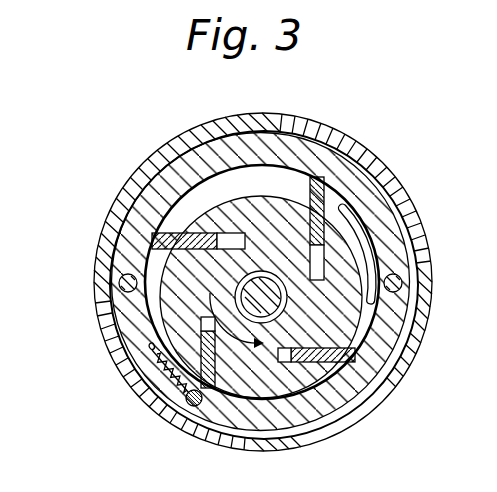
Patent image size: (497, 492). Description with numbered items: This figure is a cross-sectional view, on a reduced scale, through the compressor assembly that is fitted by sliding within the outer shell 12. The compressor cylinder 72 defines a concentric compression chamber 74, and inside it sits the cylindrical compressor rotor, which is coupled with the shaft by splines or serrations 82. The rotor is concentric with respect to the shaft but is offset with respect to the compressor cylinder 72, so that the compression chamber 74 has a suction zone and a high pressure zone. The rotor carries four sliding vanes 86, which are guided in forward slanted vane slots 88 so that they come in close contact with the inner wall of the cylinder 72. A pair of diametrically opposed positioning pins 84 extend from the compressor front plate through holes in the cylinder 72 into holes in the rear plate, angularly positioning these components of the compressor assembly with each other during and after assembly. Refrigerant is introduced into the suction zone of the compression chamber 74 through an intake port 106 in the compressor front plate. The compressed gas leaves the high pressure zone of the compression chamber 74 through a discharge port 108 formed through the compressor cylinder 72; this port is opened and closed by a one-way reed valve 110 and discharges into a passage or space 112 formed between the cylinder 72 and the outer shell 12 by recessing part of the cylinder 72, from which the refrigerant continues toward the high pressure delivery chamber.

The outer shell 12 is at (360, 153).
The compressor cylinder 72 is at (264, 422).
The compression chamber 74 is at (248, 181).
The splines or serrations 82 is at (300, 294).
The positioning pins 84 is at (120, 277).
The sliding vanes 86 is at (150, 193).
The vane slots 88 is at (224, 236).
The intake port 106 is at (345, 229).
The discharge port 108 is at (150, 348).
The one-way reed valve 110 is at (172, 373).
The passage or space 112 is at (177, 406).